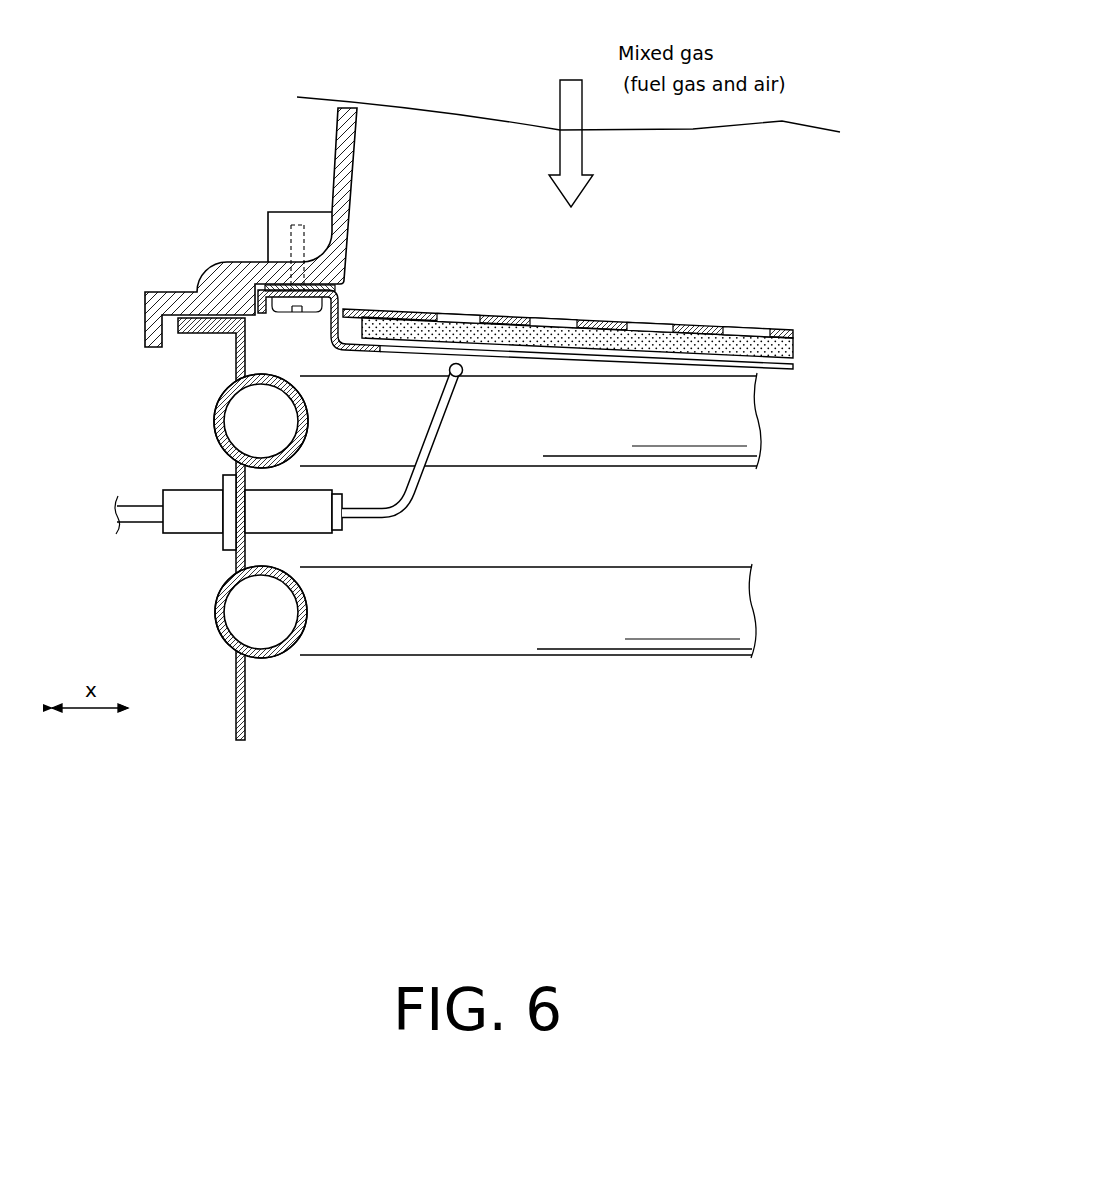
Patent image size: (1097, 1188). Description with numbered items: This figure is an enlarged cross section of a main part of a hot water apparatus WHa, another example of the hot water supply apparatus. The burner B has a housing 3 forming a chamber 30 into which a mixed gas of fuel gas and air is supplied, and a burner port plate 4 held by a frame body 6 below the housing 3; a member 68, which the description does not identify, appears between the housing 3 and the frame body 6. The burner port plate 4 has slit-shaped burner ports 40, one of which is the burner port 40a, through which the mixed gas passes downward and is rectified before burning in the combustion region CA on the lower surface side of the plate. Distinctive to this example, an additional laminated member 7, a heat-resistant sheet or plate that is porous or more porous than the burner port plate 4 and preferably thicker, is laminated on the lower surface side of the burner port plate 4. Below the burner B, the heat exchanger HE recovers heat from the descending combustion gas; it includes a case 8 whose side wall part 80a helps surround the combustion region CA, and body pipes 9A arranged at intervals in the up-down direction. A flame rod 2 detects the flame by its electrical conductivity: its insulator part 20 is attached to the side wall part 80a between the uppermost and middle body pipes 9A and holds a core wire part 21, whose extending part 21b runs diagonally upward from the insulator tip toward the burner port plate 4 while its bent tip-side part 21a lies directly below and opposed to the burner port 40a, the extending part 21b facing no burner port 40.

The hot water apparatus WHa is at (261, 110).
The burner B is at (330, 146).
The housing 3 is at (334, 176).
The gasket / retaining clip 68 is at (302, 310).
The frame body 6 is at (338, 333).
The chamber 30 is at (483, 209).
The burner port 40a is at (462, 320).
The burner ports 40 is at (561, 326).
The burner port plate 4 is at (698, 330).
The additional laminated member 7 is at (550, 342).
The combustion region CA is at (685, 371).
The heat exchanger HE is at (196, 410).
The body pipes 9A is at (306, 439).
The flame rod 2 is at (193, 486).
The insulator part 20 is at (305, 526).
The core wire part 21 is at (412, 472).
The tip-side part 21a is at (450, 369).
The extending part 21b is at (402, 499).
The case 8 is at (229, 676).
The side wall part 80a is at (237, 713).